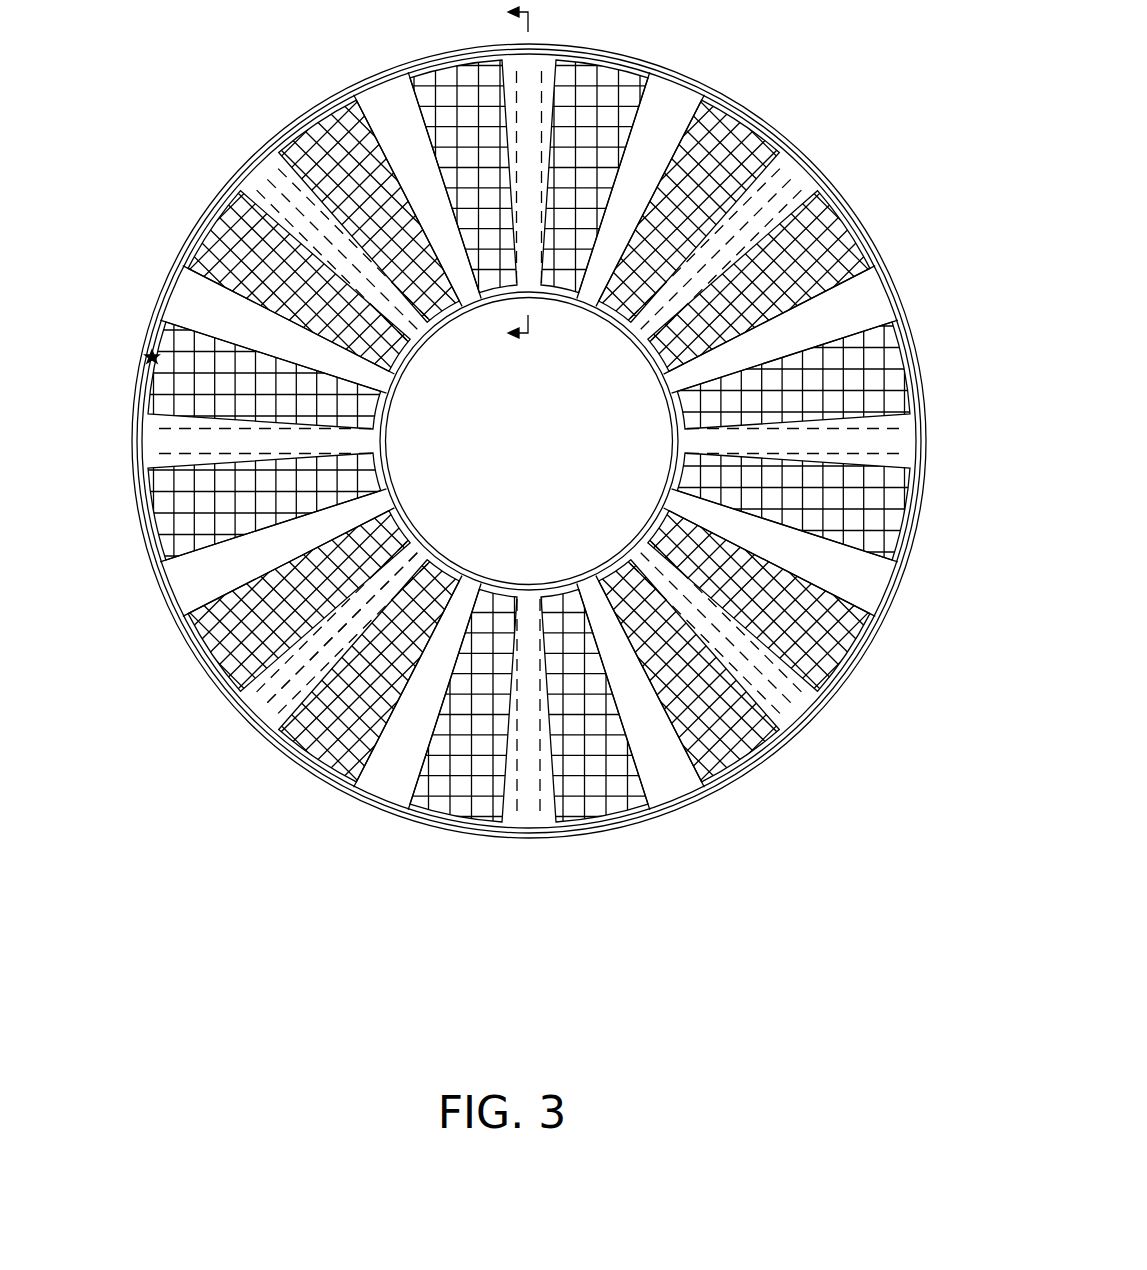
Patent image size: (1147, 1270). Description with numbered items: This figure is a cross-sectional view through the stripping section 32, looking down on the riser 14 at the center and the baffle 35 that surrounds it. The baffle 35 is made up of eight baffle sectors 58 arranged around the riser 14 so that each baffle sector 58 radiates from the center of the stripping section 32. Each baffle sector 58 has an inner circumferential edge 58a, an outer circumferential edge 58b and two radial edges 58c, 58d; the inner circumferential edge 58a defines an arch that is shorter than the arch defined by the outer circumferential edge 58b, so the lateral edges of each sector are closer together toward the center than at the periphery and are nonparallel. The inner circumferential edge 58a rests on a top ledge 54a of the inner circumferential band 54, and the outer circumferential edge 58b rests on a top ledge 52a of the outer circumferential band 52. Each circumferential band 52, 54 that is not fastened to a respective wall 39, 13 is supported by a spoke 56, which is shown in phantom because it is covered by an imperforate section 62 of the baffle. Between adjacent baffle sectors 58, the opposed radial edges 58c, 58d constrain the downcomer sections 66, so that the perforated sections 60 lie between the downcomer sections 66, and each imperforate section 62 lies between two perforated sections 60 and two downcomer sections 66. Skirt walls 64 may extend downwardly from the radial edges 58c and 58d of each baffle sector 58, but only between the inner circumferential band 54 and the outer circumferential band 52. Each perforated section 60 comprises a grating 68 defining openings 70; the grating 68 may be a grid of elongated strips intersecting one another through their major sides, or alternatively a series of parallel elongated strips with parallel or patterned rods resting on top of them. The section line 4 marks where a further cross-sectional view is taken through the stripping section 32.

The section line 4- 4 is at (528, 174).
The wall 13 is at (645, 358).
The riser 14 is at (514, 460).
The stripping section 32 is at (524, 456).
The baffle 35 is at (150, 358).
The wall 39 is at (763, 122).
The outer circumferential band 52 is at (393, 800).
The top ledge 52a is at (170, 580).
The inner circumferential band 54 is at (745, 386).
The top ledge 54a is at (387, 502).
The spoke 56 is at (527, 815).
The baffle sector 58 is at (598, 808).
The inner circumferential edge 58a is at (407, 528).
The outer circumferential edge 58b is at (255, 720).
The radial edge 58c is at (258, 578).
The radial edge 58d is at (407, 700).
The perforated section 60 is at (472, 808).
The imperforate section 62 is at (547, 813).
The skirt wall 64 is at (688, 757).
The downcomer section 66 is at (635, 700).
The grating 68 is at (293, 762).
The openings 70 is at (342, 747).